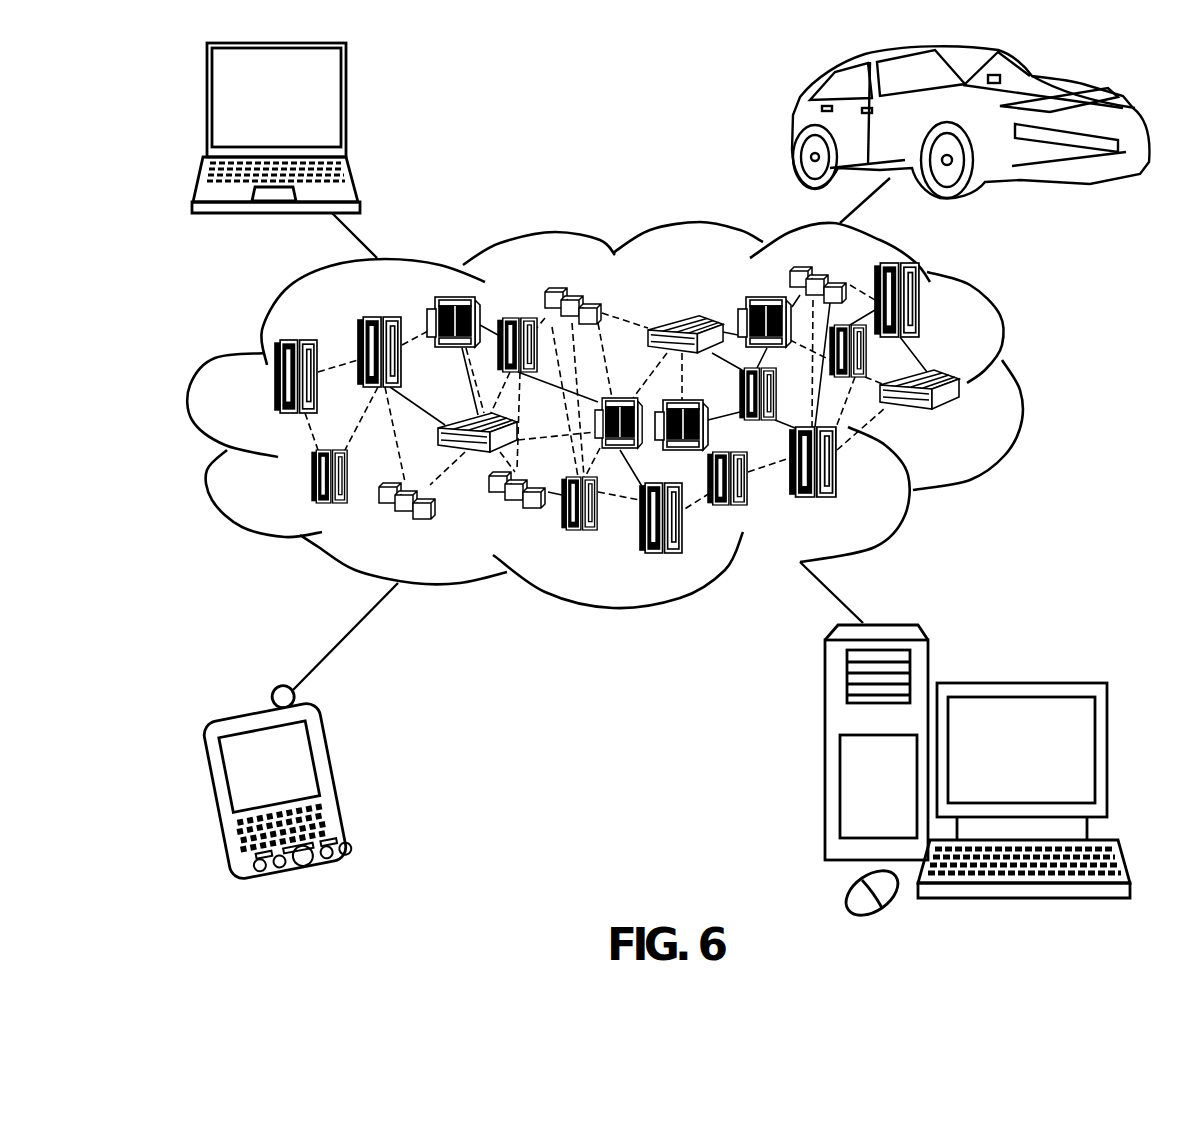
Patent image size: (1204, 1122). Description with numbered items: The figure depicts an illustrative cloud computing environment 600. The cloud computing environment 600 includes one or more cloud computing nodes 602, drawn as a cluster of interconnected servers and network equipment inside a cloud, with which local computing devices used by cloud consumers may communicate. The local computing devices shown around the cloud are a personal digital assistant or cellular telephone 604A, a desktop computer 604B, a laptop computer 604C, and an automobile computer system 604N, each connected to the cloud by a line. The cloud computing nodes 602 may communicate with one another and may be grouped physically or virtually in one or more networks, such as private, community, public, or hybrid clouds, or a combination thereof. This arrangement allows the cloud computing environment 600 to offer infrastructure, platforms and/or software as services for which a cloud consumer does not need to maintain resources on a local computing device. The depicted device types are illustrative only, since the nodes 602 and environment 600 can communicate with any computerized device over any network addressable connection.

The cloud computing environment 600 is at (1019, 385).
The cloud computing nodes 602 is at (960, 419).
The personal digital assistant (PDA) or cellular telephone 604A is at (335, 782).
The desktop computer 604B is at (1018, 683).
The laptop computer 604C is at (347, 107).
The automobile computer system 604N is at (793, 122).